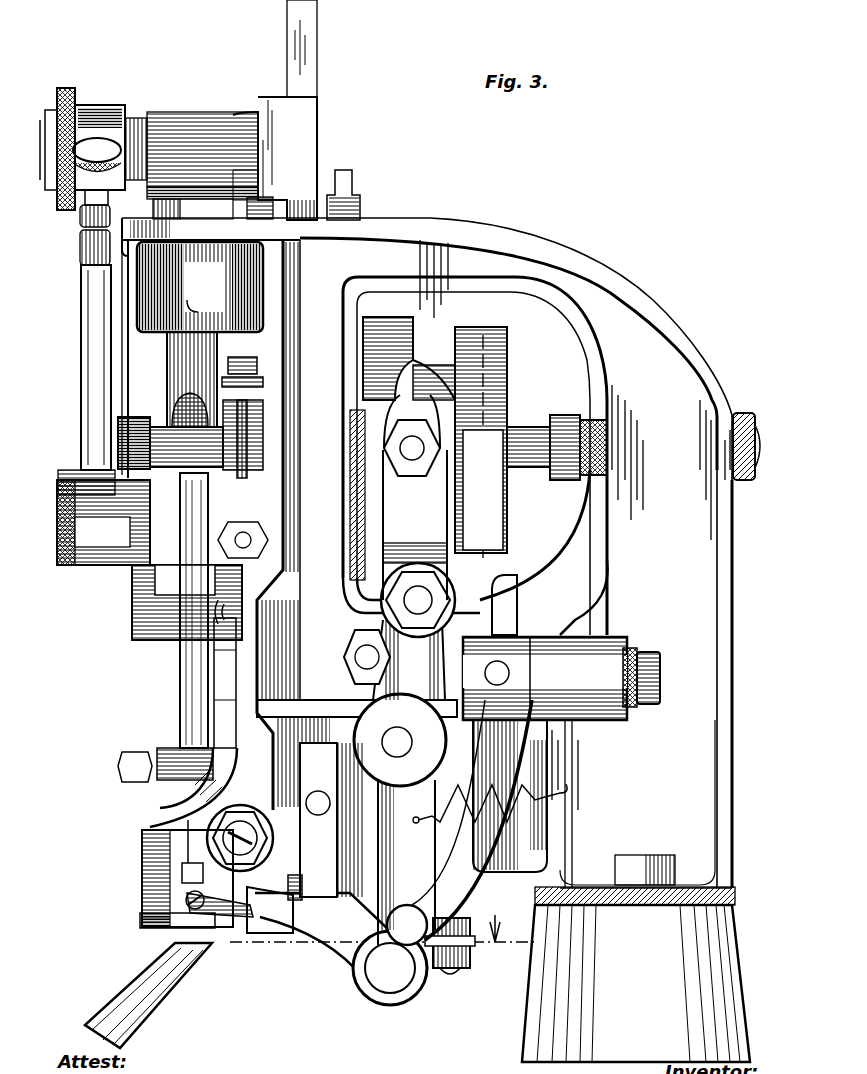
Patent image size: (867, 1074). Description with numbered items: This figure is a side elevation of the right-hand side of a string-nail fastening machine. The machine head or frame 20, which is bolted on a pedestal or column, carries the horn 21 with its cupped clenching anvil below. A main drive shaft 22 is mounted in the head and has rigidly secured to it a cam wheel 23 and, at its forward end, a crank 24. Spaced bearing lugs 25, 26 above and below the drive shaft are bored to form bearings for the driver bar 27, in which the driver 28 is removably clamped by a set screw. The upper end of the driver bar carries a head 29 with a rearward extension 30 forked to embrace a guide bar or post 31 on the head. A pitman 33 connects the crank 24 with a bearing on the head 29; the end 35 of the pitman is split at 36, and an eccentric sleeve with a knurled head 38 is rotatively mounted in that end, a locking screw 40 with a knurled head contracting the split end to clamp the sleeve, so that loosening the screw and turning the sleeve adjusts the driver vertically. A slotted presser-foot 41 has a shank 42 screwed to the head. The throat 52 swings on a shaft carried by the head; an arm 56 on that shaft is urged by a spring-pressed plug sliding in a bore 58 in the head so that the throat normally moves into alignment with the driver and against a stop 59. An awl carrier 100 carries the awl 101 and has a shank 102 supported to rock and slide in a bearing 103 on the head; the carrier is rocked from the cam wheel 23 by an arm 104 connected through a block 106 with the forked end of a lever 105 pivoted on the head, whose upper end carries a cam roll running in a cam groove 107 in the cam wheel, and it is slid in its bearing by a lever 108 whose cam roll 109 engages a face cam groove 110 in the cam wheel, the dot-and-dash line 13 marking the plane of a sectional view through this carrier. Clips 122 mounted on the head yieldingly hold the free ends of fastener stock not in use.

The centerline/block 13 is at (282, 917).
The machine head or frame 20 is at (436, 640).
The horn 21 is at (167, 1003).
The main drive shaft 22 is at (733, 443).
The cam wheel 23 is at (495, 532).
The crank 24 is at (128, 565).
The bearing lug 25 is at (190, 290).
The bearing lug 26 is at (178, 588).
The driver bar 27 is at (185, 685).
The driver 28 is at (192, 853).
The head 29 is at (192, 112).
The rearward extension 30 is at (275, 158).
The guide bar or post 31 is at (312, 58).
The pitman 33 is at (92, 350).
The end of the pitman 35 is at (95, 103).
The split 36 is at (82, 240).
The knurled head 38 is at (68, 90).
The locking screw 40 is at (95, 150).
The presser-foot 41 is at (160, 922).
The shank 42 is at (230, 690).
The throat 52 is at (197, 902).
The arm 56 is at (332, 820).
The bore 58 is at (295, 885).
The stop 59 is at (213, 840).
The awl carrier 100 is at (333, 945).
The awl 101 is at (188, 937).
The shank 102 is at (223, 917).
The bearing 103 is at (438, 966).
The arm 104 is at (406, 862).
The lever 105 is at (399, 547).
The block 106 is at (400, 740).
The cam groove 107 is at (432, 345).
The lever 108 is at (497, 820).
The cam roll 109 is at (497, 428).
The face cam groove 110 is at (490, 372).
The clips 122 is at (273, 200).